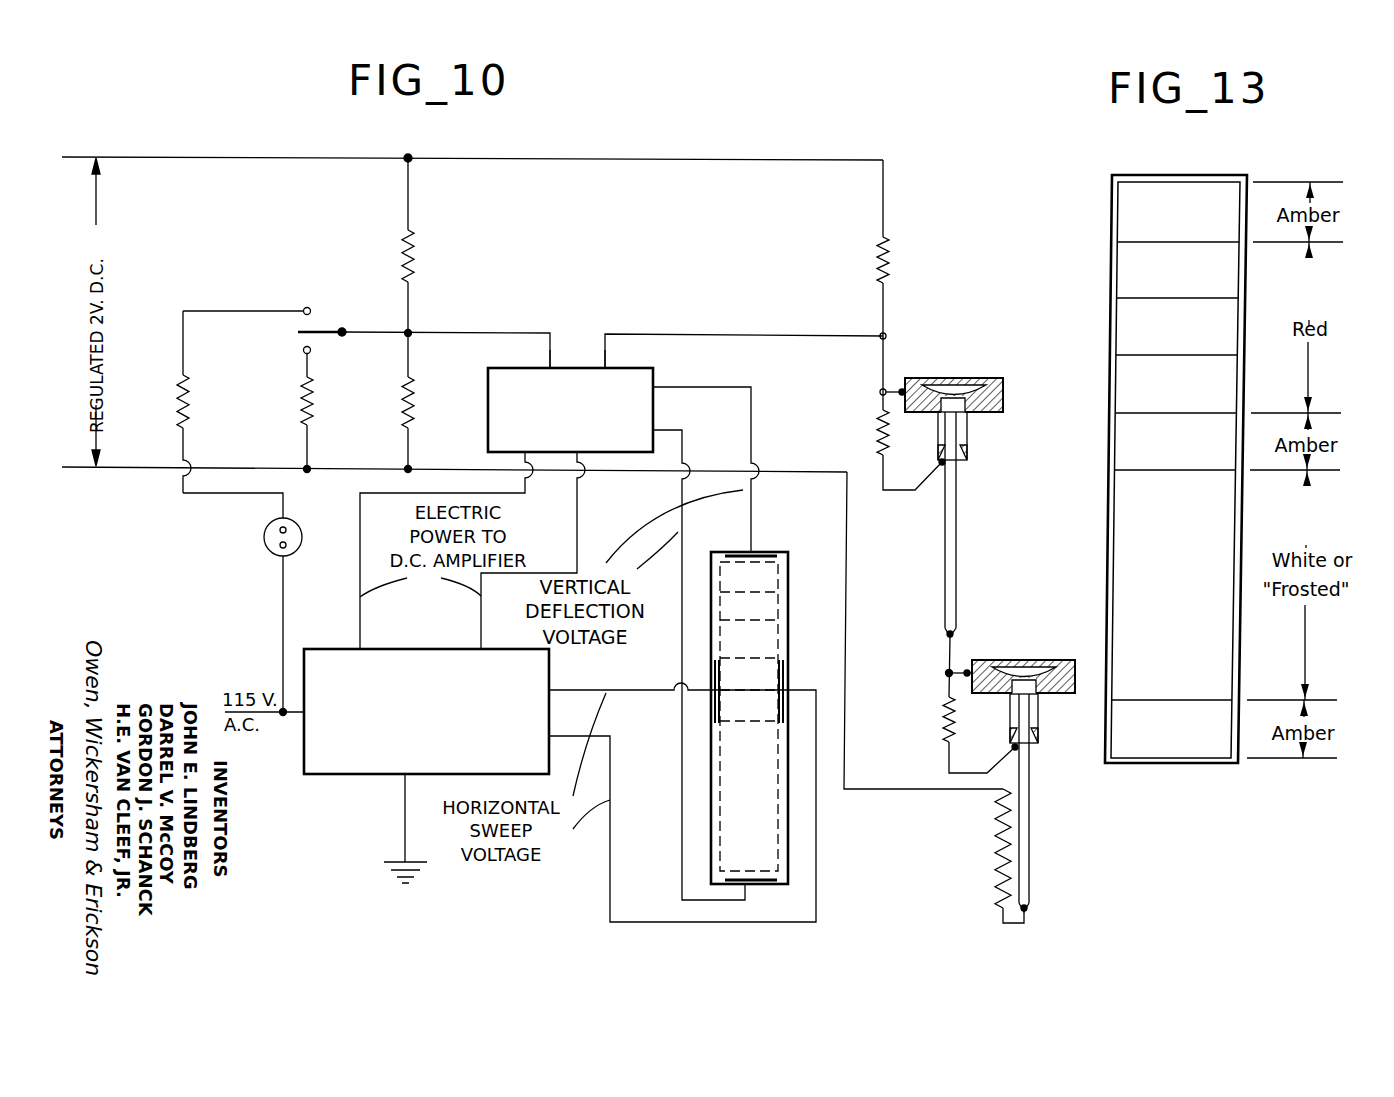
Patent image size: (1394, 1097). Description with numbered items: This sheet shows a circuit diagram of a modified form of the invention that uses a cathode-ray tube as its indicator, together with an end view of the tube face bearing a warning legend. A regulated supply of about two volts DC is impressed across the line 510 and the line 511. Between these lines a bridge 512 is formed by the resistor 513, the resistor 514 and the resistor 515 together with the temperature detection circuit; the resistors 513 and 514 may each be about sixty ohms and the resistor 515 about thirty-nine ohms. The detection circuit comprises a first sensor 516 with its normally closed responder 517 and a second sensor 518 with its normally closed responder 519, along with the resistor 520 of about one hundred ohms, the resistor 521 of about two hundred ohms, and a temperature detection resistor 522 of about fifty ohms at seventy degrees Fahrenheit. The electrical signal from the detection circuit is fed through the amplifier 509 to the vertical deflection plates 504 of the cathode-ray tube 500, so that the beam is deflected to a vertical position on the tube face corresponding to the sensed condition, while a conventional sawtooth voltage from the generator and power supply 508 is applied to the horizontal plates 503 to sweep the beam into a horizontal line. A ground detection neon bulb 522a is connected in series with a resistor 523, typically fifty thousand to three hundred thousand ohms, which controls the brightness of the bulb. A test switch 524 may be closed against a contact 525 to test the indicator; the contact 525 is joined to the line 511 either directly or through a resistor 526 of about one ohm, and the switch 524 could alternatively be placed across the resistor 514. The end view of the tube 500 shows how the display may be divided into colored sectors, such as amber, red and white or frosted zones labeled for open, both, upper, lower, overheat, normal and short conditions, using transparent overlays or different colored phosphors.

In FIG. 10, the line 510 is at (133, 156).
In FIG. 10, the line 511 is at (126, 478).
In FIG. 10, the resistor 513 is at (414, 255).
In FIG. 10, the resistor 514 is at (877, 253).
In FIG. 10, the resistor 515 is at (414, 403).
In FIG. 10, the bridge 512 is at (577, 350).
In FIG. 10, the amplifier 509 is at (657, 410).
In FIG. 10, the test switch 524 is at (340, 327).
In FIG. 10, the contact 525 is at (303, 350).
In FIG. 10, the resistor 523 is at (191, 389).
In FIG. 10, the resistor 526 is at (300, 413).
In FIG. 10, the ground detection neon bulb 522a is at (264, 535).
In FIG. 10, the generator and power supply 508 is at (422, 646).
In FIG. 10, the cathode-ray tube 500 is at (778, 540).
In FIG. 13, the cathode-ray tube 500 is at (1250, 158).
In FIG. 10, the horizontal plates 503 is at (738, 555).
In FIG. 10, the vertical deflection plates 504 is at (780, 680).
In FIG. 10, the normally closed responder 517 is at (968, 378).
In FIG. 10, the first sensor 516 is at (957, 521).
In FIG. 10, the resistor 520 is at (877, 425).
In FIG. 10, the normally closed responder 519 is at (1036, 658).
In FIG. 10, the second sensor 518 is at (1030, 831).
In FIG. 10, the resistor 521 is at (939, 736).
In FIG. 10, the temperature detection resistor 522 is at (997, 860).